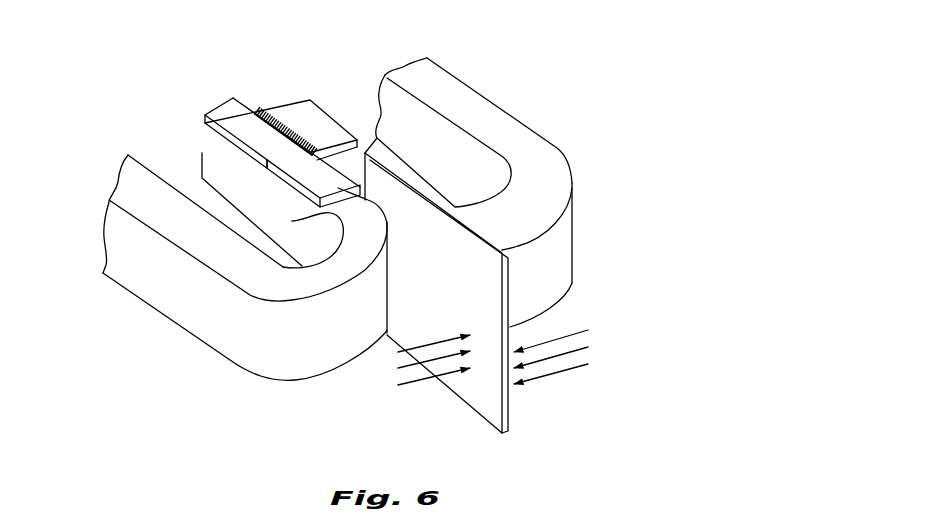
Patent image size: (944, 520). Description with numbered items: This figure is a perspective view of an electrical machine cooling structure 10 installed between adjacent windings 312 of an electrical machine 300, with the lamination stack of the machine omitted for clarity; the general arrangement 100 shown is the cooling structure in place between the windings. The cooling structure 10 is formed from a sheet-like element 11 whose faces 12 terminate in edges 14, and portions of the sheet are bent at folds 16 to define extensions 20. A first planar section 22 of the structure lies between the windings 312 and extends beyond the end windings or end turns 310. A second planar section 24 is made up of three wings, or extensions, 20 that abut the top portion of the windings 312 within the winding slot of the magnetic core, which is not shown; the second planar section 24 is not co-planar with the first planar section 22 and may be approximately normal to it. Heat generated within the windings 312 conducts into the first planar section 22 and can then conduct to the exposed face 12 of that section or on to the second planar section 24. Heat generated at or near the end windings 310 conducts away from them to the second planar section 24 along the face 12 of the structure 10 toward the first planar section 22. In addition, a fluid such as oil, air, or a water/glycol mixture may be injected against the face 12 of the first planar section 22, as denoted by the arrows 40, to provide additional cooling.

The cooling structure 10 is at (371, 230).
The sheet-like element 11 is at (404, 318).
The face 12 is at (427, 251).
The edge 14 is at (309, 100).
The fold 16 is at (231, 98).
The extension 20 is at (279, 164).
The first planar section 22 is at (481, 310).
The second planar section 24 is at (371, 230).
The fluid injection 40 is at (400, 388).
The apparatus 100 is at (356, 265).
The electrical machine 300 is at (140, 328).
The end windings 310 is at (285, 400).
The windings 312 is at (473, 107).